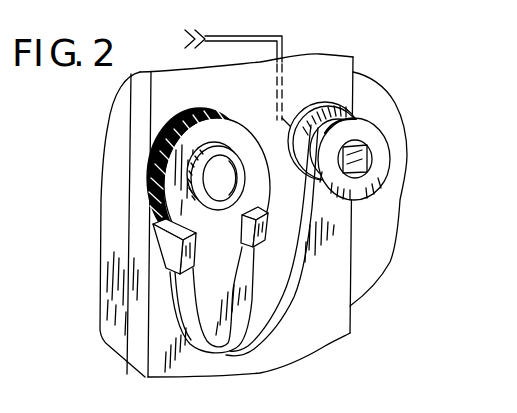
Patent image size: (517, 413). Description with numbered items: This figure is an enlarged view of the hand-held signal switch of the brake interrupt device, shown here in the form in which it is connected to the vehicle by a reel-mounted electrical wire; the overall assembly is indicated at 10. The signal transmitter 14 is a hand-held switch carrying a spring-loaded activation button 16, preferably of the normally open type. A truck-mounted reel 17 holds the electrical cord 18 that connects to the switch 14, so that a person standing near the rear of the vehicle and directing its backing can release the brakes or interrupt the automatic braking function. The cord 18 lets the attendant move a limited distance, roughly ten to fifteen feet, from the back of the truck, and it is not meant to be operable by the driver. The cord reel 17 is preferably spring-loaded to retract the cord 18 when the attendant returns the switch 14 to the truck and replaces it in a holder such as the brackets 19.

The camera body 10 is at (249, 93).
The signal transmitter 14 is at (164, 177).
The spring-loaded activation button 16 is at (221, 172).
The truck-mounted reel 17 is at (376, 134).
The electrical cord 18 is at (289, 286).
The brackets 19 is at (236, 246).